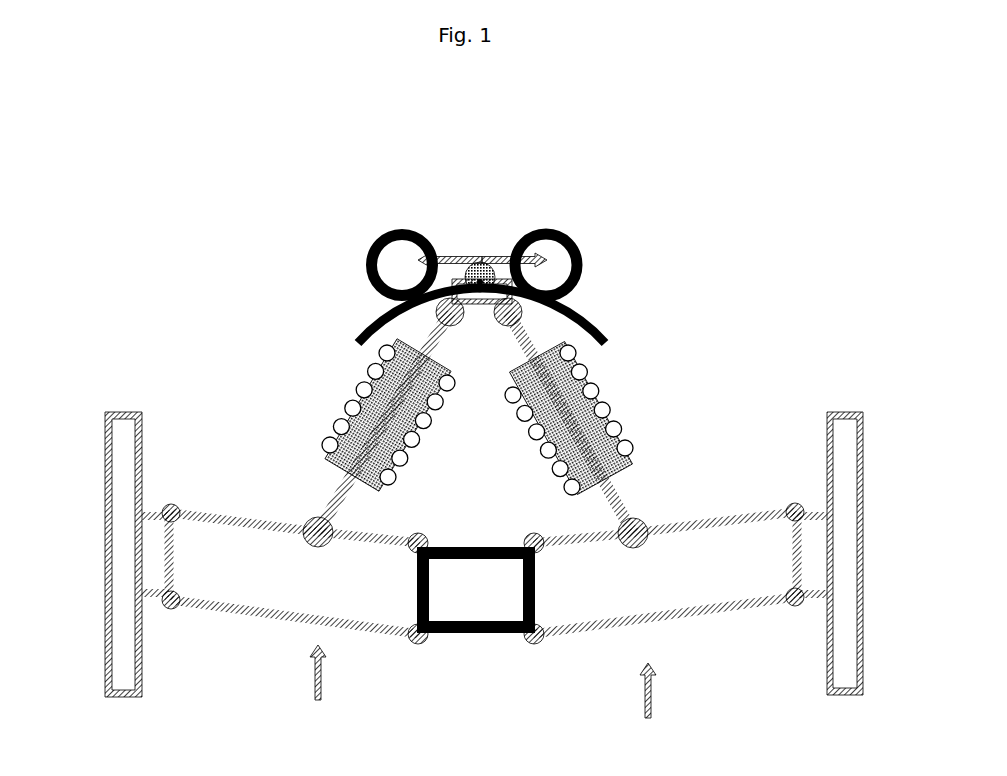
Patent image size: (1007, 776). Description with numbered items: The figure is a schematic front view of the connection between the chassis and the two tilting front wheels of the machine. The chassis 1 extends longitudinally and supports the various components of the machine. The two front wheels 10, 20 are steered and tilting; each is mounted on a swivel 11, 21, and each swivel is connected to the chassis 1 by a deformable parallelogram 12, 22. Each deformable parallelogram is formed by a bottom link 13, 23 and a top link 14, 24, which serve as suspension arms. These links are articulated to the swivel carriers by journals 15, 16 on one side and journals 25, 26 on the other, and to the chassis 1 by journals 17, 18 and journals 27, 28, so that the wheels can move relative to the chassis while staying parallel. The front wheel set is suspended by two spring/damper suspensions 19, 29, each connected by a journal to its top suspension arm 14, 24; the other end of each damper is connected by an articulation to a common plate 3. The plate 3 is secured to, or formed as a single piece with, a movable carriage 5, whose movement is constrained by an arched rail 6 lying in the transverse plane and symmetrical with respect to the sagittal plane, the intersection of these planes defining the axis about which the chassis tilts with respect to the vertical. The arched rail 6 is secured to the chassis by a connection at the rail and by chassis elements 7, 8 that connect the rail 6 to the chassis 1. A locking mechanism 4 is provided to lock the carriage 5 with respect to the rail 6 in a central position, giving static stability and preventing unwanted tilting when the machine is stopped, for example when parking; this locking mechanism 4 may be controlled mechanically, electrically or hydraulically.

The chassis 1 is at (490, 635).
The common plate 3 is at (482, 351).
The locking mechanism 4 is at (407, 267).
The movable carriage 5 is at (561, 266).
The arched rail 6 is at (526, 312).
The chassis element 7 is at (361, 241).
The chassis element 8 is at (605, 246).
The front wheel 10 is at (120, 658).
The swivel 11 is at (104, 555).
The deformable parallelogram 12 is at (318, 687).
The bottom link 13 is at (295, 641).
The top link 14 is at (295, 501).
The journal 15 is at (118, 498).
The journal 16 is at (201, 629).
The journal 17 is at (440, 663).
The journal 18 is at (397, 526).
The spring/damper suspension 19 is at (358, 422).
The front wheel 20 is at (847, 643).
The swivel 21 is at (864, 542).
The deformable parallelogram 22 is at (648, 705).
The bottom link 23 is at (664, 629).
The top link 24 is at (665, 490).
The journal 25 is at (851, 479).
The journal 26 is at (758, 632).
The journal 27 is at (530, 654).
The journal 28 is at (555, 526).
The spring/damper suspension 29 is at (606, 423).